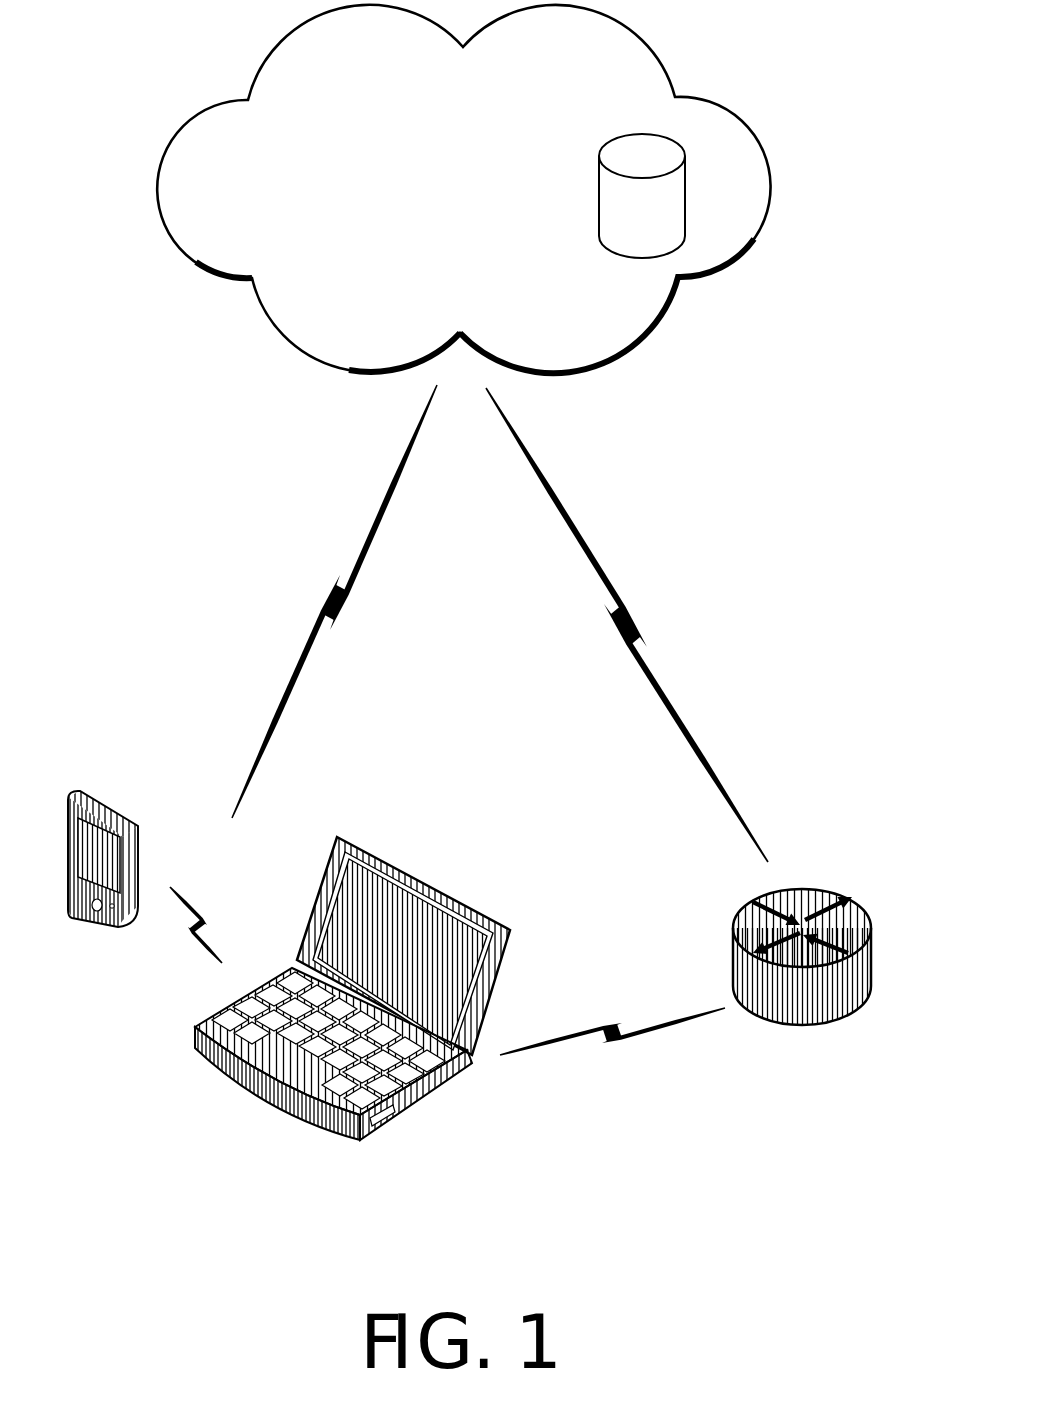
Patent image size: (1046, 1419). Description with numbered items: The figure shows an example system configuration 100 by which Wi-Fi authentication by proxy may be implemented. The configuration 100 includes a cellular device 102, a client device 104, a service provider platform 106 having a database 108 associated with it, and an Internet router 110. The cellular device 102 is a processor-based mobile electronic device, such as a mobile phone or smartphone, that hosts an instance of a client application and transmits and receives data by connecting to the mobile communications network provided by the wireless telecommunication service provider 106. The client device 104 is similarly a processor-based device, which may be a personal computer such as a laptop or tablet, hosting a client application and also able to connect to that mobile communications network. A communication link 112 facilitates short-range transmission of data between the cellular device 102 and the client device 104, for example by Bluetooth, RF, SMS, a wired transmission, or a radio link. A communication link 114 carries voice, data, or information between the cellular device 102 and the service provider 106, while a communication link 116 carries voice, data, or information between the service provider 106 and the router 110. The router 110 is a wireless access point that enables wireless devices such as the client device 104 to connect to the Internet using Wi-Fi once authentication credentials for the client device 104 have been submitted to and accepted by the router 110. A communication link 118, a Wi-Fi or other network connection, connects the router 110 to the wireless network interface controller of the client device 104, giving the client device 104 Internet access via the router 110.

The configuration 100 is at (71, 35).
The cellular device 102 is at (96, 834).
The client device 104 is at (352, 973).
The service provider platform 106 is at (463, 189).
The database 108 is at (642, 196).
The Internet router 110 is at (775, 952).
The communication link 112 is at (198, 919).
The communication link 114 is at (334, 602).
The communication link 116 is at (626, 625).
The communication link 118 is at (612, 1021).